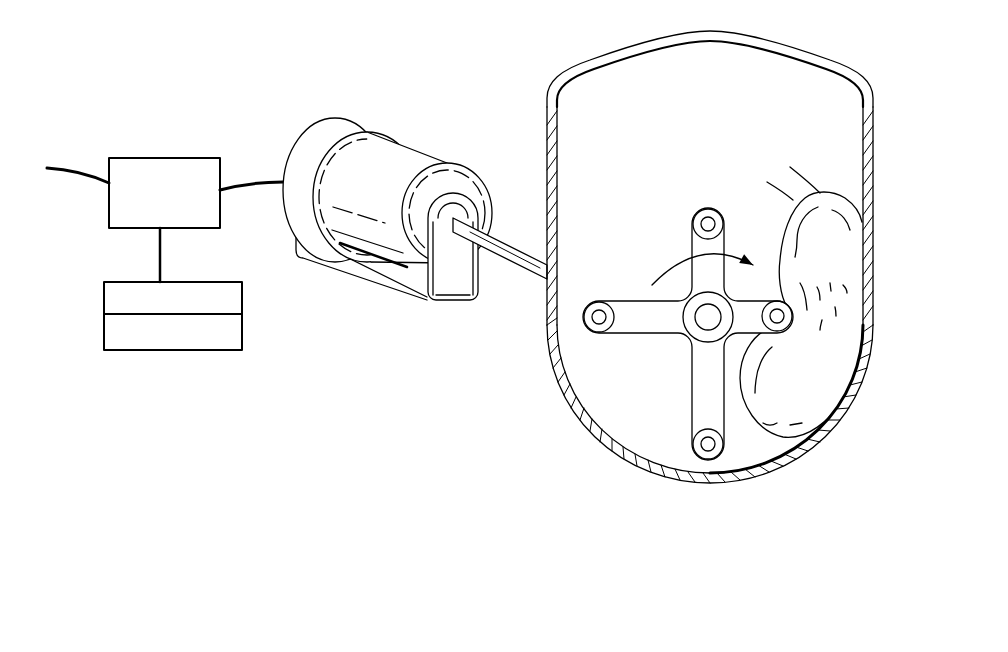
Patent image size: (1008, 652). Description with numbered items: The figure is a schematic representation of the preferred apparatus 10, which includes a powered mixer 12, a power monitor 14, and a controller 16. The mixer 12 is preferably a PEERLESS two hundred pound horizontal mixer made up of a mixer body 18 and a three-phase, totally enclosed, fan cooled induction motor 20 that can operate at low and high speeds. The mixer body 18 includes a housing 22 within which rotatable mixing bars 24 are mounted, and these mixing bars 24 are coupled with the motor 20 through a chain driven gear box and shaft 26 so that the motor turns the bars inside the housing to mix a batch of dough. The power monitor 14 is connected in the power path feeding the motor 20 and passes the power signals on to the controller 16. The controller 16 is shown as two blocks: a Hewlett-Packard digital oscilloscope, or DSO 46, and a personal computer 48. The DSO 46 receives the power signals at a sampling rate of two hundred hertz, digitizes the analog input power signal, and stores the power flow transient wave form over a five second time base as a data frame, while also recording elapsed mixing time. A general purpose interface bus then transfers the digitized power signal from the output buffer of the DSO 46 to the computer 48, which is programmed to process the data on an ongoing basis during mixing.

The apparatus 10 is at (395, 418).
The powered mixer 12 is at (657, 245).
The power monitor 14 is at (203, 172).
The controller 16 is at (194, 345).
The mixer body 18 is at (560, 398).
The induction motor 20 is at (388, 165).
The housing 22 is at (778, 65).
The rotatable mixing bars 24 is at (708, 260).
The shaft 26 is at (533, 255).
The digital oscilloscope (DSO) 46 is at (115, 298).
The personal computer 48 is at (228, 345).